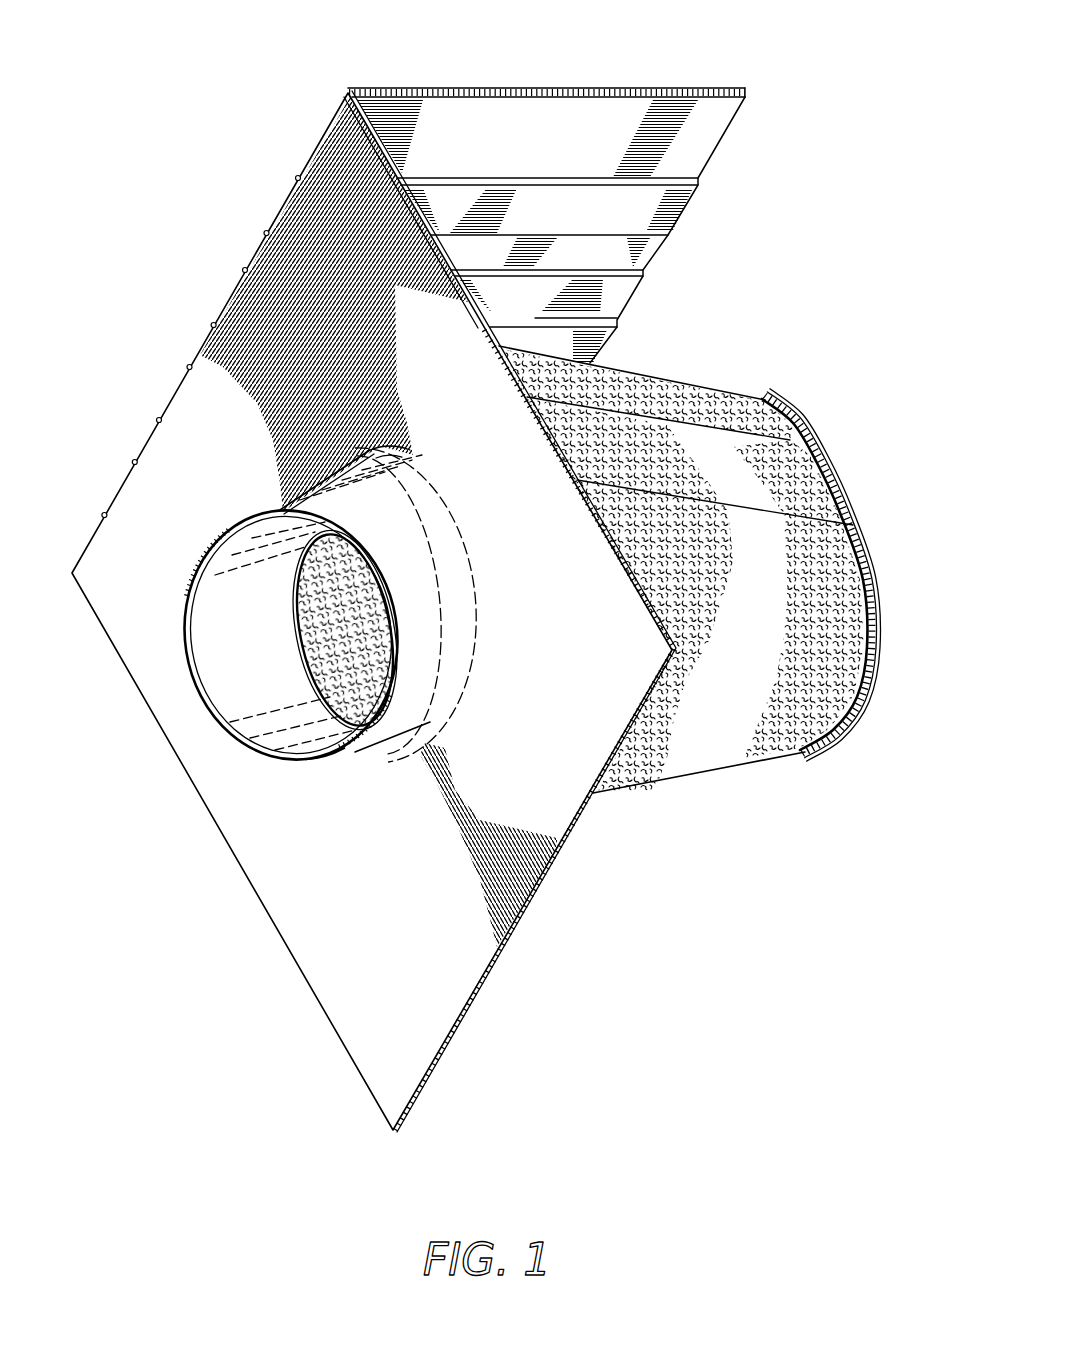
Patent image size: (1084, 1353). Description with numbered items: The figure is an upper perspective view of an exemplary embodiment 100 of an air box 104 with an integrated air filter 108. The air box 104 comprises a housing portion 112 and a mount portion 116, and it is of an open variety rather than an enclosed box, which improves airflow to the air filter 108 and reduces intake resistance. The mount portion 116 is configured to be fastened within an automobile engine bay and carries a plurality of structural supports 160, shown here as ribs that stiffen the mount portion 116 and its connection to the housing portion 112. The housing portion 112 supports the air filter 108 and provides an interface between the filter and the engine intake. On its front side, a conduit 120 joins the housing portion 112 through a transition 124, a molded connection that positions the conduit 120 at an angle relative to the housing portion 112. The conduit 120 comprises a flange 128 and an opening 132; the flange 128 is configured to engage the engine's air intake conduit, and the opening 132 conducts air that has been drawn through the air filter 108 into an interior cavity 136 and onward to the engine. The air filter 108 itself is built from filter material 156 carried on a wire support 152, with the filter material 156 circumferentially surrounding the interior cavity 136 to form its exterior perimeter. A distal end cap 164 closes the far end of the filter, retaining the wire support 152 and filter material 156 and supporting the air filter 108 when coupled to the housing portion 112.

The exemplary embodiment 100 is at (497, 579).
The air box 104 is at (358, 604).
The air filter 108 is at (651, 440).
The housing portion 112 is at (247, 878).
The mount portion 116 is at (570, 90).
The conduit 120 is at (258, 581).
The transition 124 is at (377, 447).
The flange 128 is at (296, 762).
The opening 132 is at (233, 661).
The interior cavity 136 is at (340, 665).
The wire support 152 is at (793, 512).
The filter material 156 is at (673, 773).
The structural supports 160 is at (688, 208).
The distal end cap 164 is at (818, 453).